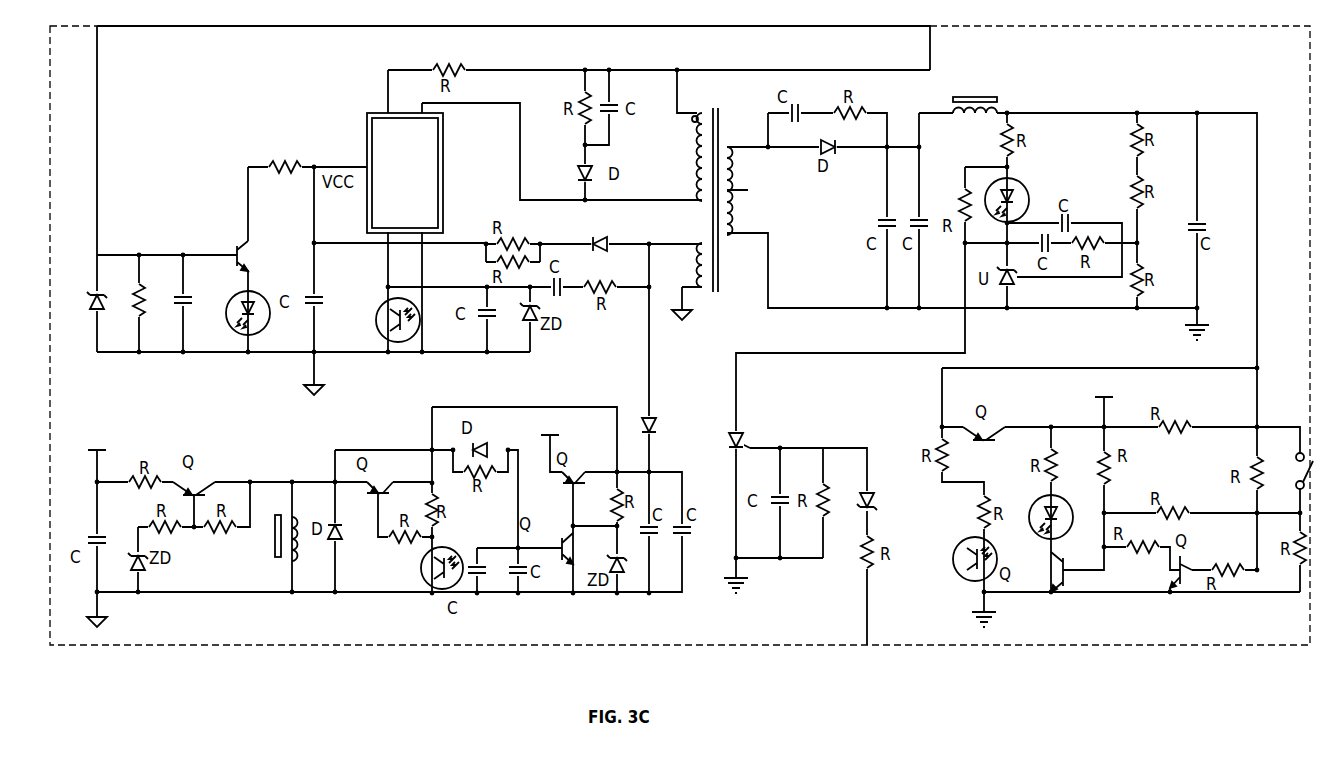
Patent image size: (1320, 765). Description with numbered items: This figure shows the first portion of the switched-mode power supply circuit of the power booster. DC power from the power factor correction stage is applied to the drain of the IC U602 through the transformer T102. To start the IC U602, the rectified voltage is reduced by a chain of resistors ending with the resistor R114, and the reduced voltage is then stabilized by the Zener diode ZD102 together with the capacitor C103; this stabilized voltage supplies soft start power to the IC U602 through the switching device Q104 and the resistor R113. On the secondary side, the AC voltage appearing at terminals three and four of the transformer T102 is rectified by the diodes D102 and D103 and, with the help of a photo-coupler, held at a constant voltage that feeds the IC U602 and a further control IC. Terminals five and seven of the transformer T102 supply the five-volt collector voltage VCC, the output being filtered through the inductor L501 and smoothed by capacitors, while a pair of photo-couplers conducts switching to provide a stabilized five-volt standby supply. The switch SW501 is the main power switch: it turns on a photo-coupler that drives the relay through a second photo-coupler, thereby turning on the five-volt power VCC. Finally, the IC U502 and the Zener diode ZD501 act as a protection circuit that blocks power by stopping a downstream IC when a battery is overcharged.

The resistor R113 is at (282, 157).
The switching device Q104 is at (219, 246).
The Zener diode ZD102 is at (84, 305).
The resistor R114 is at (130, 304).
The capacitor C103 is at (172, 306).
The IC U602 is at (427, 173).
The collector voltage VCC is at (338, 182).
The transformer T102 is at (717, 183).
The diode D102 is at (606, 233).
The diode D103 is at (671, 415).
The inductor L501 is at (975, 94).
The IC U502 is at (755, 430).
The Zener diode ZD501 is at (876, 489).
The switch SW501 is at (1285, 446).